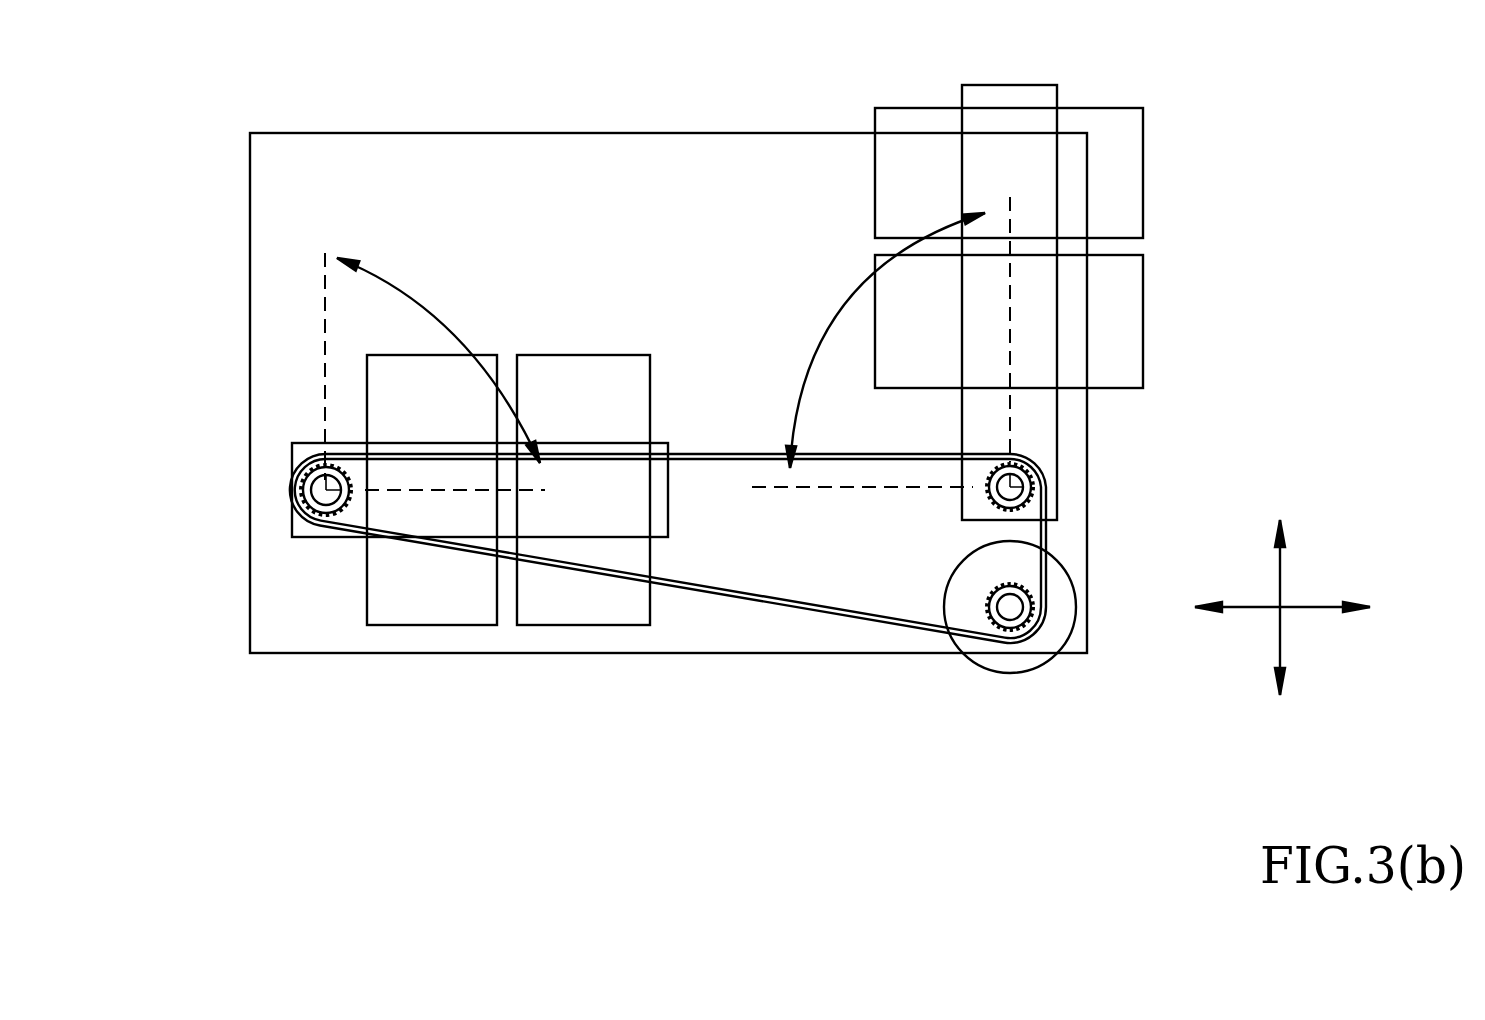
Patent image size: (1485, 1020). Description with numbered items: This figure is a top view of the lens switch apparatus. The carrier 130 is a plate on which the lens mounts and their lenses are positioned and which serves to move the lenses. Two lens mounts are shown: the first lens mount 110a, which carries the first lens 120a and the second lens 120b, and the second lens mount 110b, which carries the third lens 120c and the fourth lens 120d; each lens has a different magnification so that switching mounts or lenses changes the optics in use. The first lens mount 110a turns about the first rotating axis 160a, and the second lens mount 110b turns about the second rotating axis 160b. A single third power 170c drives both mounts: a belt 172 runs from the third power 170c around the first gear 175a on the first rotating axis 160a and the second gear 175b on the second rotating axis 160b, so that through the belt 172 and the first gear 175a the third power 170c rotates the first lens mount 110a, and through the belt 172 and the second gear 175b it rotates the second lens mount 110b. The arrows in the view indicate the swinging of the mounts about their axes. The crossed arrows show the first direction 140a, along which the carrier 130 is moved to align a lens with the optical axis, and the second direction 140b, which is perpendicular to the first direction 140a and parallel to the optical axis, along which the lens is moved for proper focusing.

The first lens mount 110a is at (662, 493).
The second lens mount 110b is at (1015, 93).
The first lens 120a is at (435, 603).
The second lens 120b is at (585, 603).
The third lens 120c is at (1125, 324).
The fourth lens 120d is at (1125, 172).
The carrier 130 is at (290, 187).
The first direction 140a is at (1313, 610).
The second direction 140b is at (1278, 647).
The first rotating axis 160a is at (300, 512).
The second rotating axis 160b is at (1035, 497).
The third power 170c is at (1030, 672).
The belt 172 is at (913, 620).
The first gear 175a is at (330, 517).
The second gear 175b is at (1037, 504).